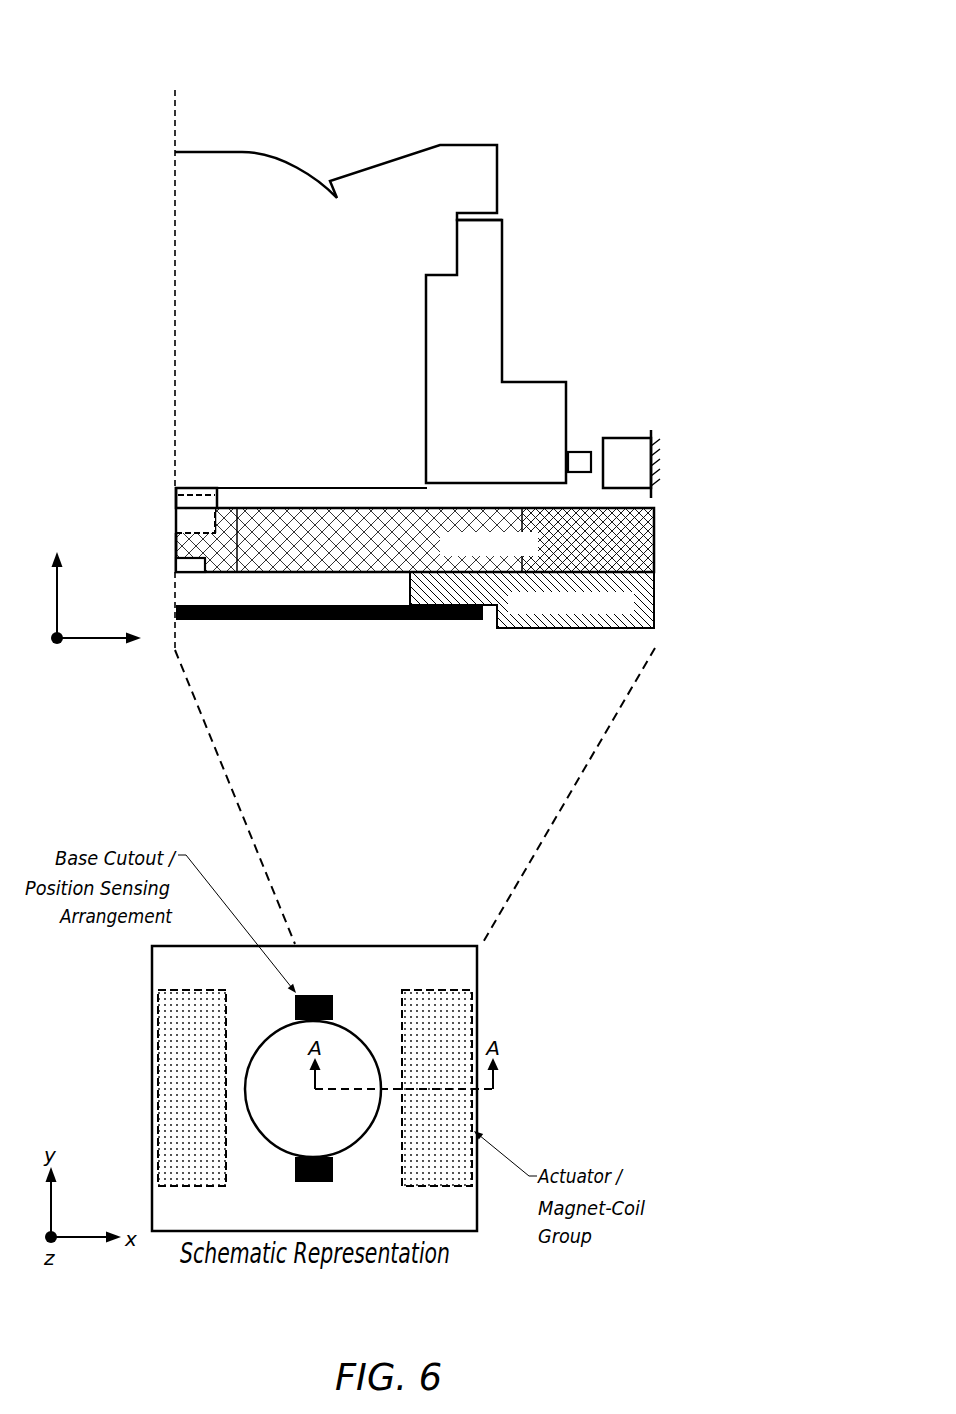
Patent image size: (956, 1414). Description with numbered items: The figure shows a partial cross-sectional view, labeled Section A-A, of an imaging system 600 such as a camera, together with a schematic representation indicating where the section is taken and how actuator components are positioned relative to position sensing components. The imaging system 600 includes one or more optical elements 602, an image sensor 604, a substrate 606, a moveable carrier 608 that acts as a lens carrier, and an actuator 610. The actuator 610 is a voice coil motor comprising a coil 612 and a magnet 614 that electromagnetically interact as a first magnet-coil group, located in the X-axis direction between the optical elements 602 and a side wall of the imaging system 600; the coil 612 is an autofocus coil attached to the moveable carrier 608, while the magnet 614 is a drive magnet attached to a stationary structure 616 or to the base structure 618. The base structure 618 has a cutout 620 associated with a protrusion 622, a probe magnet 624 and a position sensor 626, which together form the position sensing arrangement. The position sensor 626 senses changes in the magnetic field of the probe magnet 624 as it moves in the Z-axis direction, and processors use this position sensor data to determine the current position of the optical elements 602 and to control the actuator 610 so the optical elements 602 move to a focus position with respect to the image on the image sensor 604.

The imaging system 600 is at (132, 76).
The optical elements 602 is at (254, 141).
The image sensor 604 is at (287, 621).
The substrate 606 is at (632, 611).
The moveable carrier 608 is at (511, 436).
The actuator 610 is at (595, 434).
The coil 612 is at (576, 451).
The magnet 614 is at (634, 438).
The stationary structure 616 is at (653, 490).
The base structure 618 is at (530, 551).
The cutout 620 is at (175, 538).
The protrusion 622 is at (194, 486).
The probe magnet 624 is at (218, 487).
The position sensor 626 is at (176, 564).